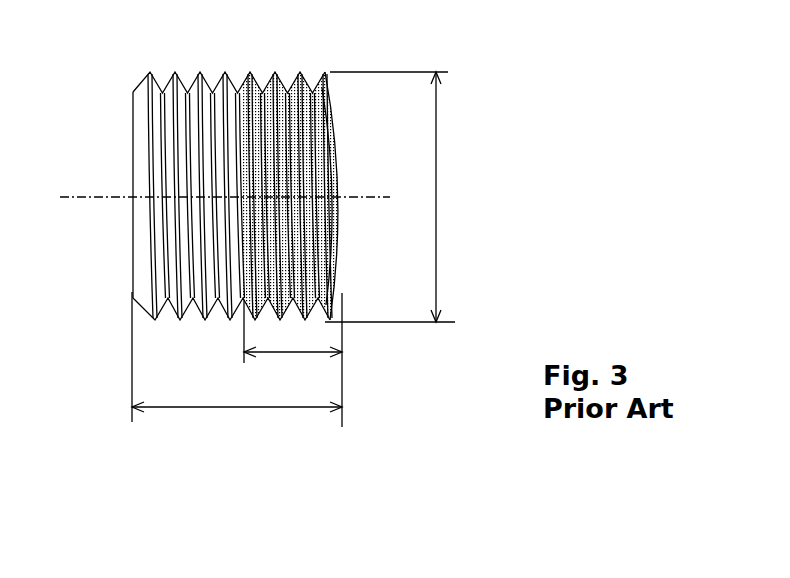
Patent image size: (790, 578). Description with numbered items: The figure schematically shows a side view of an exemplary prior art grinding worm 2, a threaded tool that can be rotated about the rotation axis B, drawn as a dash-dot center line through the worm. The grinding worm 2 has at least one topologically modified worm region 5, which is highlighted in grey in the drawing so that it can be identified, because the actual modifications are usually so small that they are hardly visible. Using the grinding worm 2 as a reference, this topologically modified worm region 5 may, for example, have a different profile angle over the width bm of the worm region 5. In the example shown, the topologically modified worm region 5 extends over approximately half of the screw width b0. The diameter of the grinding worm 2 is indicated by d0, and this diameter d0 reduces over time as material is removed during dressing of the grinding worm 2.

The grinding worm 2 is at (93, 41).
The topologically modified worm region 5 is at (330, 63).
The rotation axis B is at (216, 199).
The diameter of the grinding worm d0 is at (394, 197).
The width of the worm region bm is at (293, 338).
The screw width b0 is at (237, 364).